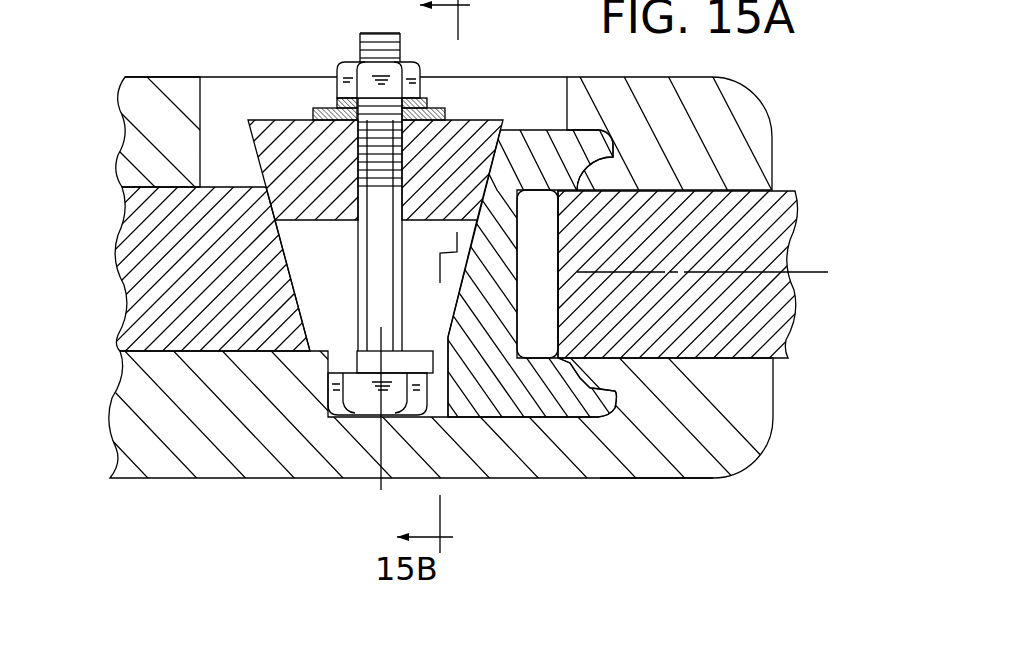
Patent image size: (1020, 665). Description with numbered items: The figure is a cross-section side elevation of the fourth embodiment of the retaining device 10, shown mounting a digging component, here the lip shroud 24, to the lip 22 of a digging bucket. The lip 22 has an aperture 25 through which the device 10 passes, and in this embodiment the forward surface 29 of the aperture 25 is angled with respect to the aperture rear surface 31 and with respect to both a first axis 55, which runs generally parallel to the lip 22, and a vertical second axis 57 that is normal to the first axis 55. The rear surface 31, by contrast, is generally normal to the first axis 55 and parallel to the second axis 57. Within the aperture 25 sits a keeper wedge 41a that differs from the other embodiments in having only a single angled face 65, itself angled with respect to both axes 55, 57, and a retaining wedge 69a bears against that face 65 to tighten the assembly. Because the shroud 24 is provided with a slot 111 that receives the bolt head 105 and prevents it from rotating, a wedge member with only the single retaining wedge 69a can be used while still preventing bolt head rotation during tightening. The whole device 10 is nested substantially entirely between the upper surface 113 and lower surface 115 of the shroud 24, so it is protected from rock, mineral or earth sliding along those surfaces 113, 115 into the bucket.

The device 10 is at (212, 553).
The lip 22 is at (135, 247).
The lip shroud 24 is at (180, 470).
The aperture 25 is at (333, 290).
The forward surface 29 is at (287, 275).
The rear surface 31 is at (560, 238).
The keeper wedge 41a is at (567, 403).
The first axis 55 is at (789, 276).
The second axis 57 is at (379, 488).
The angled face 65 is at (508, 362).
The retaining wedge 69a is at (321, 180).
The bolt head 105 is at (373, 413).
The slot 111 is at (430, 387).
The upper surface 113 is at (147, 80).
The lower surface 115 is at (655, 478).